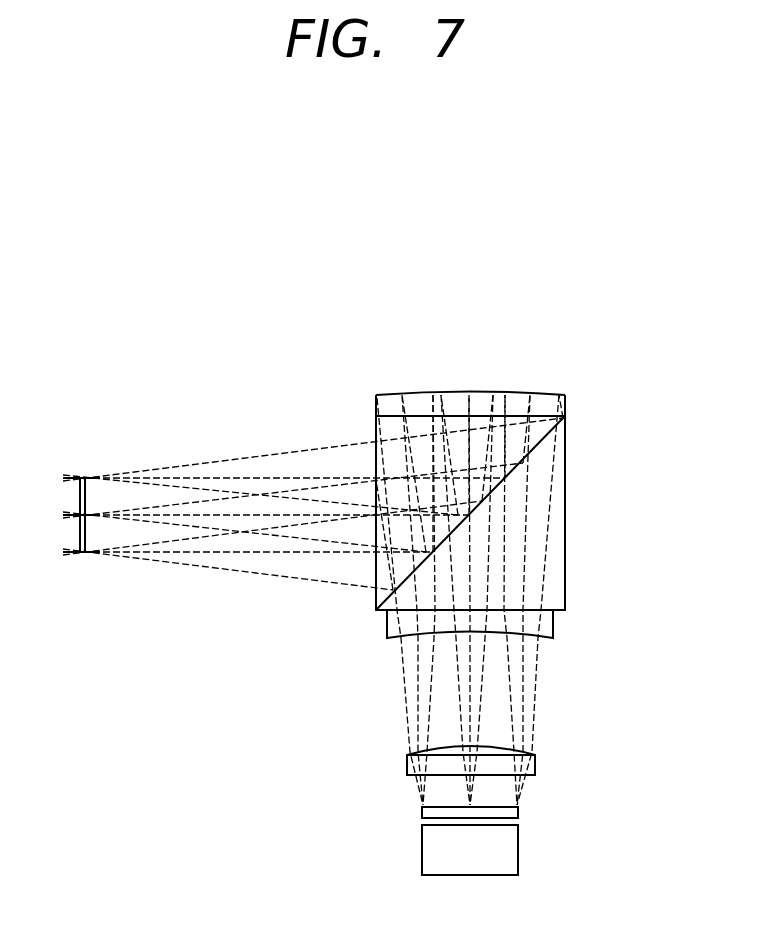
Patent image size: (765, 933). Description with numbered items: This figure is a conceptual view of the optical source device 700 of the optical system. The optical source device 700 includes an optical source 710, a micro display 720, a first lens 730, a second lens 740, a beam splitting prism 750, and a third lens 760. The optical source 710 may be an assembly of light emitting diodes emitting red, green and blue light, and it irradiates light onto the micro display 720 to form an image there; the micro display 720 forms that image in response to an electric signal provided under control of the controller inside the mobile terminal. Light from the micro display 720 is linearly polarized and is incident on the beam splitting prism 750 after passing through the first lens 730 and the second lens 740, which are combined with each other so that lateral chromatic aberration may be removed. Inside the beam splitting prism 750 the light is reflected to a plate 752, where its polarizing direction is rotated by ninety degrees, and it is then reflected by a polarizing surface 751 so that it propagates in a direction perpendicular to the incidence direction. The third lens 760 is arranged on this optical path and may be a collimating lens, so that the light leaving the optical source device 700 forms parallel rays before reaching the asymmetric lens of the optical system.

The optical source device 700 is at (544, 339).
The optical source 710 is at (518, 849).
The micro display 720 is at (518, 811).
The first lens 730 is at (535, 763).
The second lens 740 is at (553, 621).
The beam splitting prism 750 is at (565, 503).
The polarizing surface 751 is at (548, 436).
The plate 752 is at (456, 392).
The third lens 760 is at (88, 496).